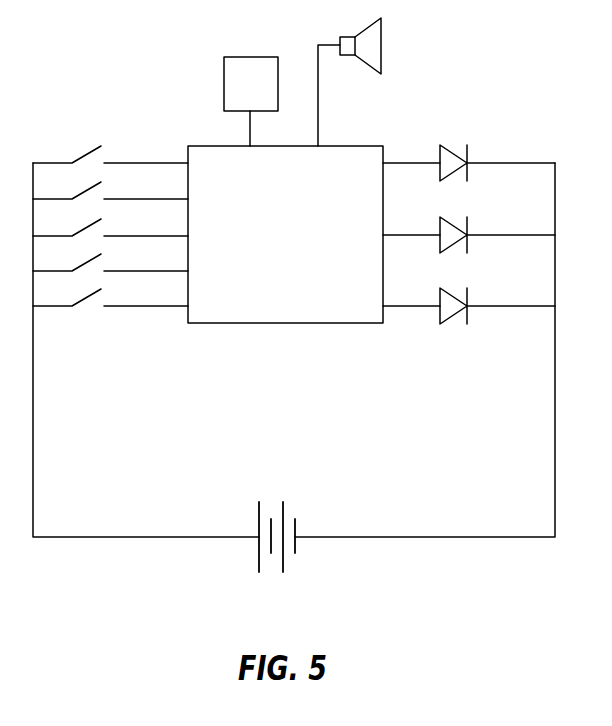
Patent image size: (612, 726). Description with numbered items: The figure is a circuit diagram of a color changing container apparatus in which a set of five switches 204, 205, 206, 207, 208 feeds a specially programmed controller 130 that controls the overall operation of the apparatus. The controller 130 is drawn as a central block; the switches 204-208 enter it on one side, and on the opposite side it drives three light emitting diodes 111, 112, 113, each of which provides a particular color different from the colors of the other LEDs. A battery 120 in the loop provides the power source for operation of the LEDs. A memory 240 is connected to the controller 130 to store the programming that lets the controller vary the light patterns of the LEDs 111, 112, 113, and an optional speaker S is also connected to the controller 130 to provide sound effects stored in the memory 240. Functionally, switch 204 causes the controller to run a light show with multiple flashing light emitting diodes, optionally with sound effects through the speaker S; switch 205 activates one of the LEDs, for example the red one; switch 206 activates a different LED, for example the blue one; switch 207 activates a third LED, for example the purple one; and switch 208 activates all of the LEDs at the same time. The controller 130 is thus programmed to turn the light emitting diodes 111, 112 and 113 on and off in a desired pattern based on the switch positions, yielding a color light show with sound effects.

The light emitting diode 111 is at (451, 175).
The light emitting diode 112 is at (451, 247).
The light emitting diode 113 is at (451, 318).
The battery 120 is at (297, 482).
The controller 130 is at (332, 323).
The switch 204 is at (110, 149).
The switch 205 is at (110, 185).
The switch 206 is at (110, 222).
The switch 207 is at (110, 257).
The switch 208 is at (110, 292).
The memory 240 is at (224, 72).
The speaker S is at (363, 32).